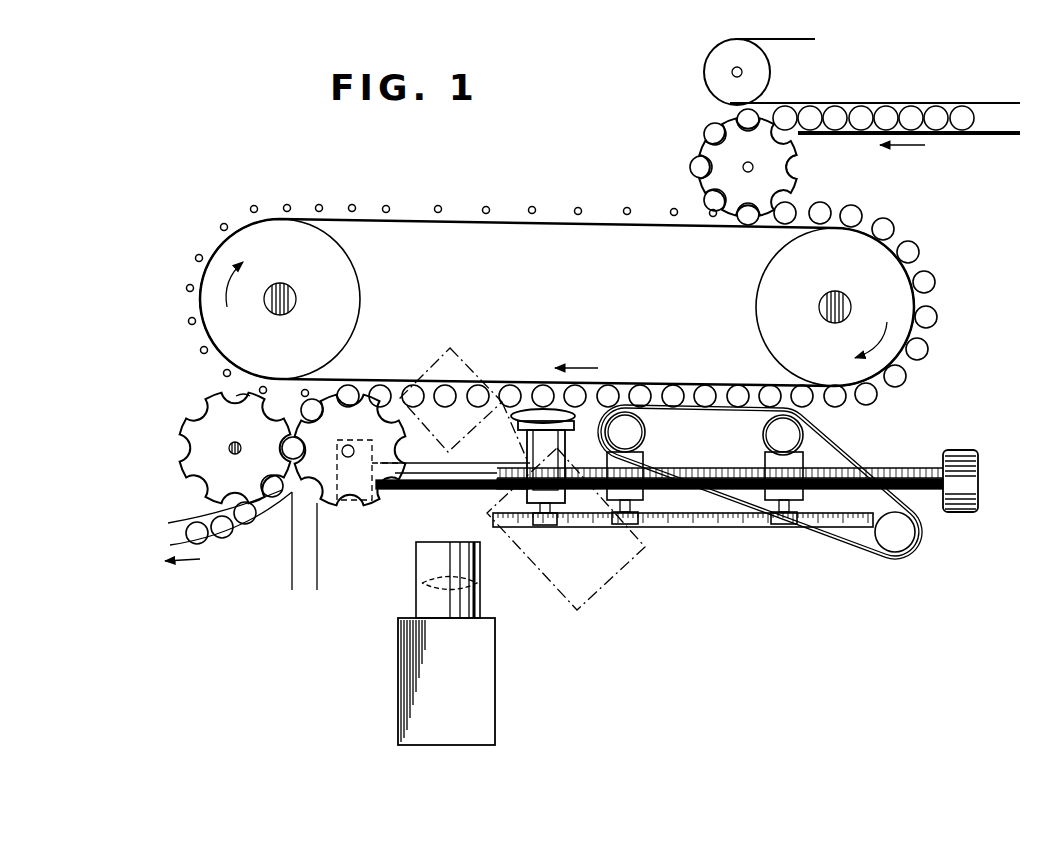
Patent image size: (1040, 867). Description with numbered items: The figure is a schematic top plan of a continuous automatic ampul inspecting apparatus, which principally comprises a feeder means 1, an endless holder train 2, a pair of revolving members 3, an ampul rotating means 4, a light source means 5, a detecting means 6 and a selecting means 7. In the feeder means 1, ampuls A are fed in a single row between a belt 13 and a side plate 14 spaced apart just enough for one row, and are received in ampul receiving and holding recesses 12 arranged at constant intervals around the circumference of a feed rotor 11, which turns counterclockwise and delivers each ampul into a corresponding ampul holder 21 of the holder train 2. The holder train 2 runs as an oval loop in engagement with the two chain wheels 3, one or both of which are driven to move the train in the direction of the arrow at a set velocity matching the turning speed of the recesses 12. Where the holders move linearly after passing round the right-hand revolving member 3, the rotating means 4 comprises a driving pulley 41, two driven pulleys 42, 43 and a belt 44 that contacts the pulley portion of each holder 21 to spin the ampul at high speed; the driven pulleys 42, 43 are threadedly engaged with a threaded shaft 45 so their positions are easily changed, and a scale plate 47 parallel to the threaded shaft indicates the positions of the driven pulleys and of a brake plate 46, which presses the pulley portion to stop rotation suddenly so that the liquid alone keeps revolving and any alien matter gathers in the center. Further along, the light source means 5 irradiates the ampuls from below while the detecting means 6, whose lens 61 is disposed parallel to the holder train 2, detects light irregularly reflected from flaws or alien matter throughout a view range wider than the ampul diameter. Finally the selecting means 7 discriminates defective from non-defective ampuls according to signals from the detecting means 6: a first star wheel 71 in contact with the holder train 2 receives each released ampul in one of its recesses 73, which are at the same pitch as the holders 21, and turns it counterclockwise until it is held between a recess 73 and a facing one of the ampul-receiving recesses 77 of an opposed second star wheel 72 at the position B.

The feeder means 1 is at (712, 110).
The feed rotor 11 is at (795, 150).
The ampul receiving and holding recesses 12 is at (796, 170).
The belt 13 is at (903, 103).
The side plate 14 is at (909, 151).
The endless holder train 2 is at (511, 220).
The ampul holder 21 is at (578, 208).
The revolving members (chain wheels) 3 is at (210, 308).
The ampul rotating means 4 is at (683, 543).
The driving pulley 41 is at (910, 539).
The driven pulley 42 is at (798, 434).
The driven pulley 43 is at (636, 432).
The belt 44 is at (850, 531).
The threaded shaft 45 is at (905, 468).
The brake plate 46 is at (540, 405).
The scale plate 47 is at (690, 527).
The light source means 5 is at (536, 586).
The detecting means 6 is at (495, 672).
The lens 61 is at (478, 583).
The selecting means 7 is at (183, 453).
The first star wheel 71 is at (372, 500).
The second star wheel 72 is at (190, 437).
The recesses 73 is at (405, 410).
The ampul-receiving recesses 77 is at (235, 398).
The ampuls A is at (964, 106).
The position B is at (284, 448).